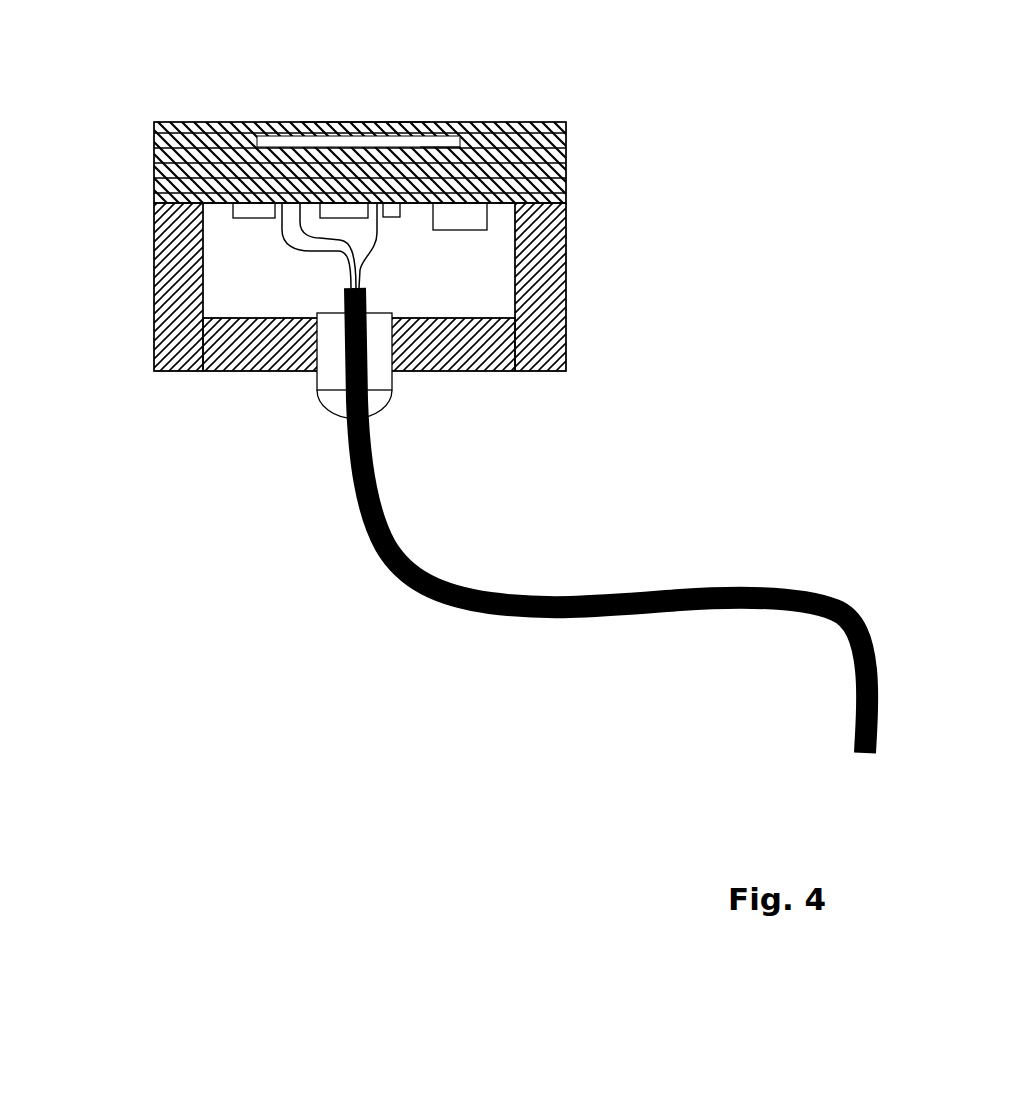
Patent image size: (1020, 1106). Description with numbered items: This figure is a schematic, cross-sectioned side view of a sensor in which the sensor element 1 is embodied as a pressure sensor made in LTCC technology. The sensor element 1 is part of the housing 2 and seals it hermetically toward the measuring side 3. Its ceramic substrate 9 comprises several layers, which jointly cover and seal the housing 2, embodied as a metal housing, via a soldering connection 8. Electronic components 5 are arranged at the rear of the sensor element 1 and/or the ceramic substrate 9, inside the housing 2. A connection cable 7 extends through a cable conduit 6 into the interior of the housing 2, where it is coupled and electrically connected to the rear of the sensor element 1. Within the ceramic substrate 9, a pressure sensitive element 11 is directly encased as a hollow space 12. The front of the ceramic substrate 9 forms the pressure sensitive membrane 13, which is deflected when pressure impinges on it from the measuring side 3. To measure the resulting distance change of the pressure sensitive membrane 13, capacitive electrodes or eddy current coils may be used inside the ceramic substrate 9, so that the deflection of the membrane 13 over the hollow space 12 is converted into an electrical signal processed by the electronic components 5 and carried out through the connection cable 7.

The sensor element 1 is at (647, 95).
The housing 2 is at (565, 293).
The measuring side 3 is at (353, 104).
The electronic components 5 is at (503, 215).
The cable conduit 6 is at (308, 405).
The connection cable 7 is at (387, 572).
The soldering connection 8 is at (148, 208).
The ceramic substrate 9 is at (150, 160).
The pressure sensitive element 11 is at (337, 140).
The hollow space 12 is at (433, 140).
The pressure sensitive membrane 13 is at (403, 125).